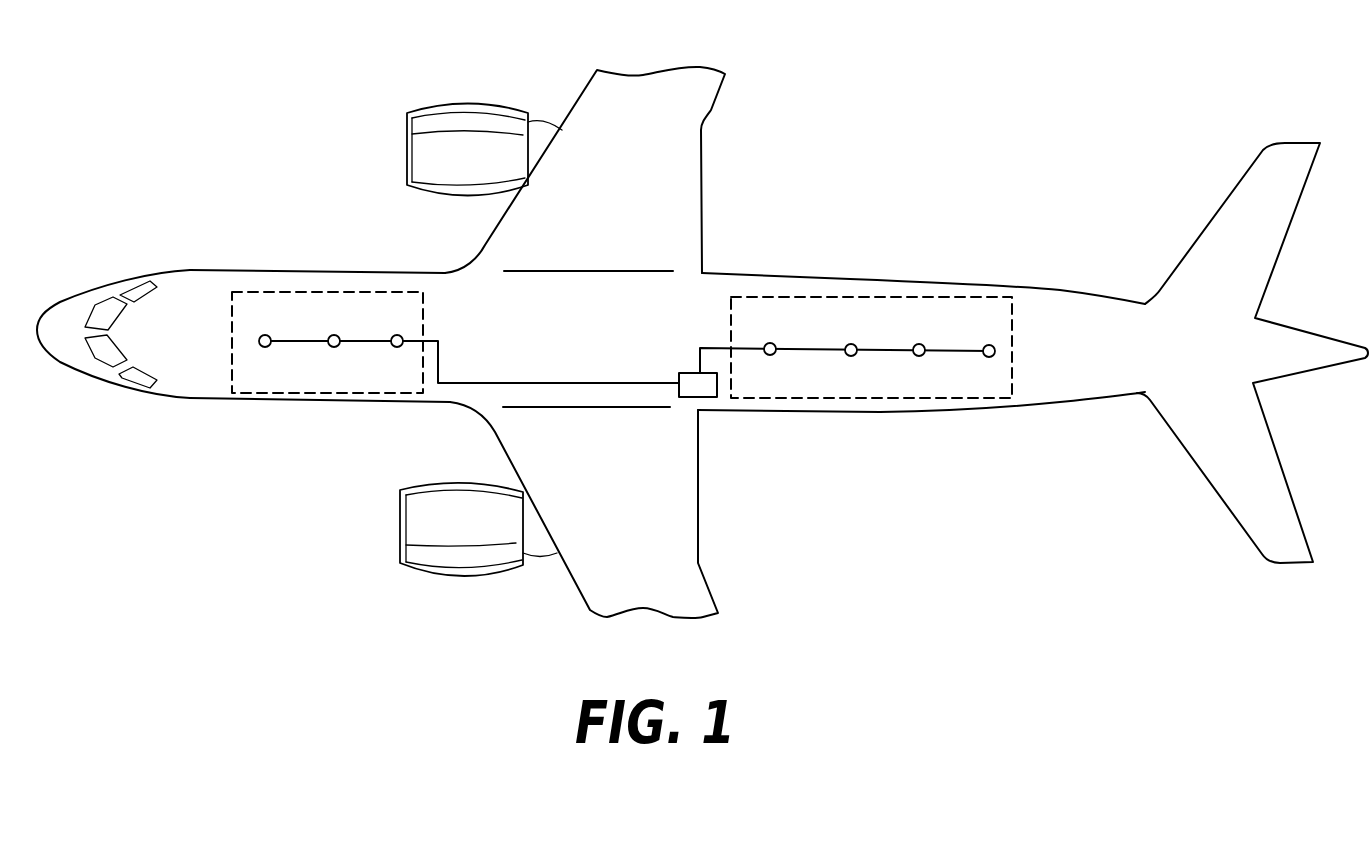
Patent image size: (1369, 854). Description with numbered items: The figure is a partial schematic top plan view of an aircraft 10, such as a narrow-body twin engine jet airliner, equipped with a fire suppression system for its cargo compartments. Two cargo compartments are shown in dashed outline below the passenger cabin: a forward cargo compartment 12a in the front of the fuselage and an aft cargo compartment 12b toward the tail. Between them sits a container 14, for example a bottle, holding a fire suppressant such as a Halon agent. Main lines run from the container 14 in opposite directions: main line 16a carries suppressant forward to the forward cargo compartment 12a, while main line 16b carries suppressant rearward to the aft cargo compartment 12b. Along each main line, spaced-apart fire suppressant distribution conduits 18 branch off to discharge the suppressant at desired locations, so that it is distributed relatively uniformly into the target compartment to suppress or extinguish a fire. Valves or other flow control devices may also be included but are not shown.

The aircraft 10 is at (287, 139).
The forward cargo compartment 12a is at (278, 290).
The aft cargo compartment 12b is at (853, 297).
The container 14 is at (712, 400).
The main line 16a is at (504, 384).
The main line 16b is at (707, 347).
The fire suppressant distribution conduit 18 is at (330, 347).